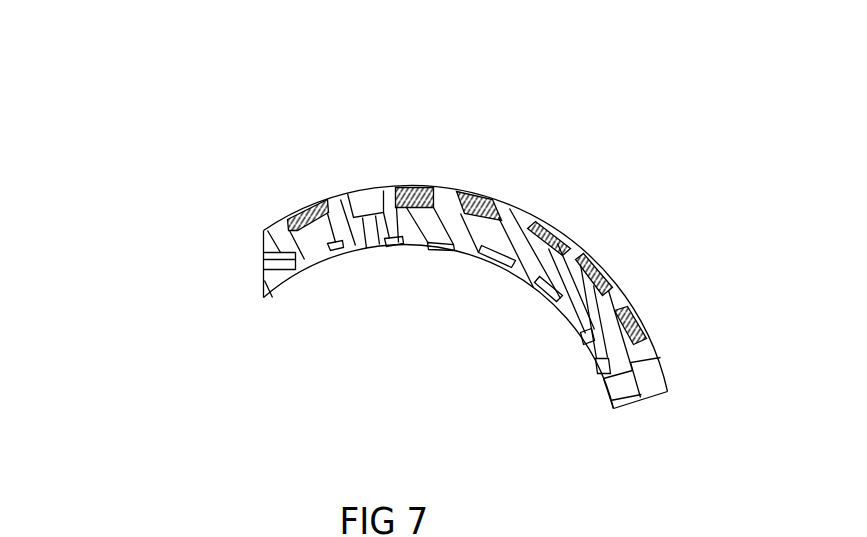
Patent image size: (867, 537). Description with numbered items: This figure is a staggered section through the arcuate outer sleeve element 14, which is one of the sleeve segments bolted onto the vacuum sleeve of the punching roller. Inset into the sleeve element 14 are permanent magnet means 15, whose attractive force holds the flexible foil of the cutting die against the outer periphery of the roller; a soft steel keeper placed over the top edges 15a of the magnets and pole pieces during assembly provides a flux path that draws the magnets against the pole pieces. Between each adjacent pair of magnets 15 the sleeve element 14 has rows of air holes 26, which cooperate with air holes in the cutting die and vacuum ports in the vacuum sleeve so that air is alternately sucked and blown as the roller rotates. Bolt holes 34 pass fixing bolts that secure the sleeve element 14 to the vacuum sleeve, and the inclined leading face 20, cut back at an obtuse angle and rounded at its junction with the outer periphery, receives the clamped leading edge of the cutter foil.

The sleeve element 14 is at (435, 231).
The permanent magnet means 15 is at (301, 208).
The top edges 15a is at (500, 199).
The leading face 20 is at (263, 282).
The air holes 26 is at (604, 300).
The bolt holes 34 is at (370, 202).